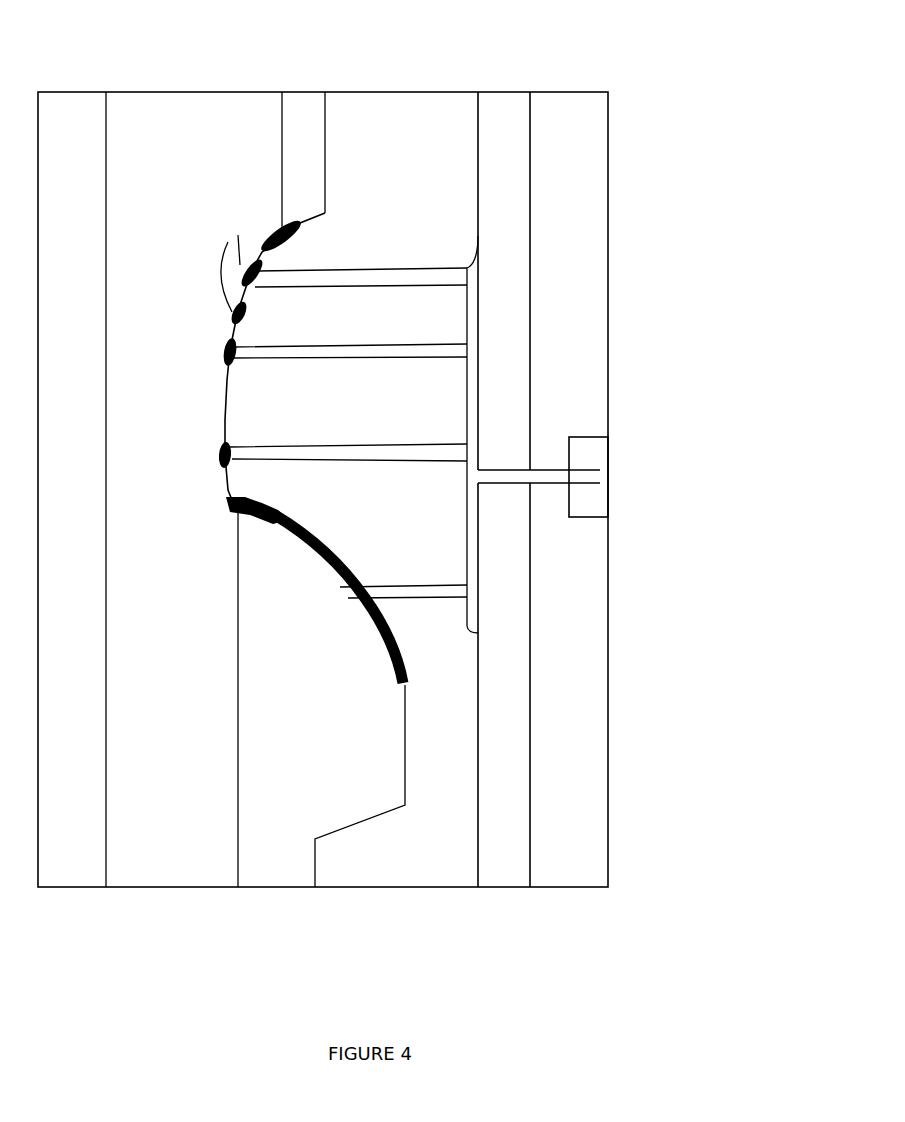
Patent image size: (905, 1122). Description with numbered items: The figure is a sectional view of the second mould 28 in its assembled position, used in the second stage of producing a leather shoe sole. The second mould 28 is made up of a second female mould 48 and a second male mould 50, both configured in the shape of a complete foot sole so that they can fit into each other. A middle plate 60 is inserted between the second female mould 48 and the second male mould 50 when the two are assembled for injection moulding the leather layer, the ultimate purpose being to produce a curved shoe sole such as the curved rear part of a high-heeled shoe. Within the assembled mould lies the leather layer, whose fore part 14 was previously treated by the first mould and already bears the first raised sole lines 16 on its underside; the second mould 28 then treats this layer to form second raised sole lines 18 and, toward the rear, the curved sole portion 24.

The second mould 28 is at (692, 228).
The second female mould 48 is at (196, 108).
The second male mould 50 is at (385, 108).
The middle plate 60 is at (568, 110).
The fore part 14 is at (160, 450).
The first raised sole lines 16 is at (263, 248).
The molded protrusions 18 is at (255, 290).
The molded strip 24 is at (160, 627).